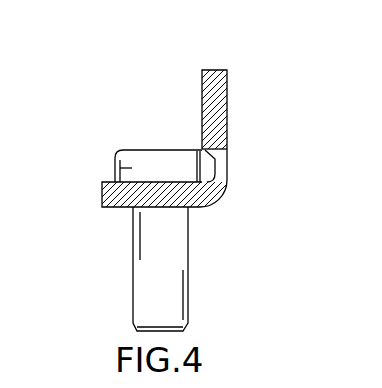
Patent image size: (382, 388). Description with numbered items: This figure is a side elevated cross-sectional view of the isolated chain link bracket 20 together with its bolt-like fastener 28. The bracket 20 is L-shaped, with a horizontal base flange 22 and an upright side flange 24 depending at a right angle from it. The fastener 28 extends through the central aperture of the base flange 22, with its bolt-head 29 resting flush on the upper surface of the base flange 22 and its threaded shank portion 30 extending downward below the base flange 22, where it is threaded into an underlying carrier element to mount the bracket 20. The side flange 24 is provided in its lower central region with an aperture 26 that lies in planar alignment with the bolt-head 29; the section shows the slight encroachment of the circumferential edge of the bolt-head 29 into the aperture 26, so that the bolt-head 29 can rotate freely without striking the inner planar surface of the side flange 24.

The chain link bracket member 20 is at (227, 78).
The base flange 22 is at (110, 196).
The side flange 24 is at (227, 98).
The aperture 26 is at (227, 157).
The bolt-like fastener 28 is at (115, 165).
The bolt-head portion 29 is at (168, 158).
The threaded shank portion 30 is at (160, 240).